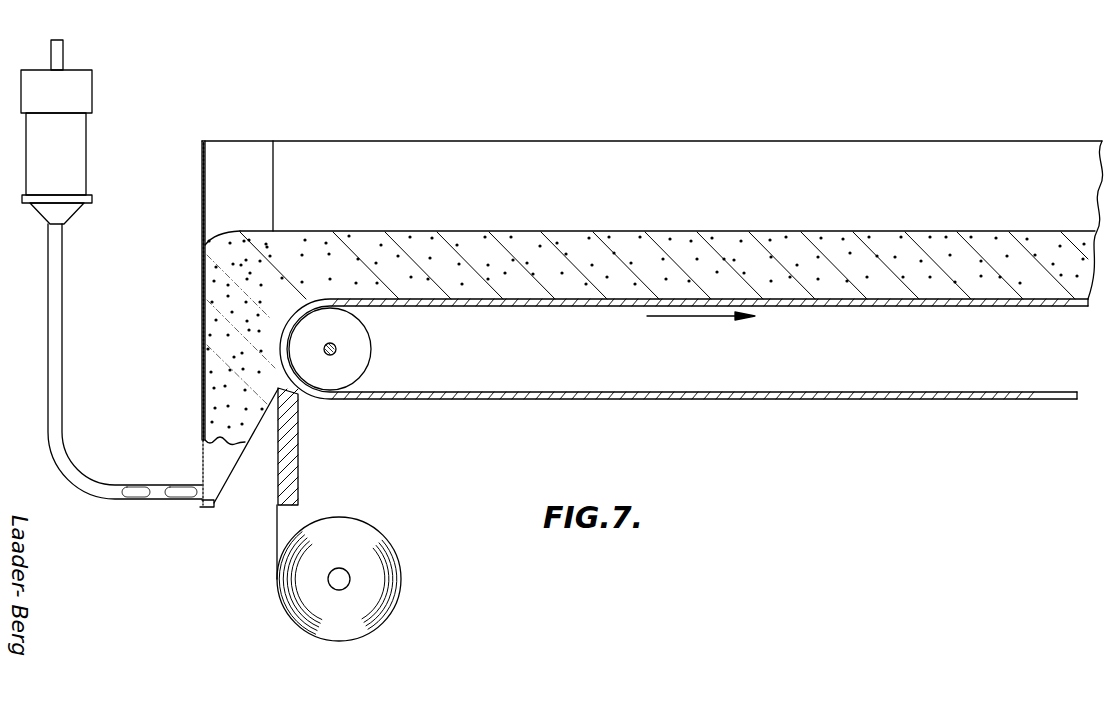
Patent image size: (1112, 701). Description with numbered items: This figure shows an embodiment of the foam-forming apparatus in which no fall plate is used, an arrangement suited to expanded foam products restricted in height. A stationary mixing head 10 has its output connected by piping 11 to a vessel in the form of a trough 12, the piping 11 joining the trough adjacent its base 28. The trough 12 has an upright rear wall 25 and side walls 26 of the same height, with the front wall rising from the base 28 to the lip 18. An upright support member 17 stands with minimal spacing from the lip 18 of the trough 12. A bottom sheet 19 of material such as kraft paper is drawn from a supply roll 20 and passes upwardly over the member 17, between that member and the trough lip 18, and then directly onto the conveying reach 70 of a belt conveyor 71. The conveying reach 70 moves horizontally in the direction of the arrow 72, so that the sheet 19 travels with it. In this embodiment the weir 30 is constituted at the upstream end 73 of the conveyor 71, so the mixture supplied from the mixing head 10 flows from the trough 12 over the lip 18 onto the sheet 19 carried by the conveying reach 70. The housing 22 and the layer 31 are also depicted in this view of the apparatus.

The mixing head 10 is at (78, 146).
The piping 11 is at (53, 459).
The trough 12 is at (196, 432).
The upright support member 17 is at (298, 488).
The lip 18 is at (273, 388).
The sheet of material 19 is at (275, 518).
The supply roll 20 is at (363, 552).
The housing 22 is at (515, 157).
The rear wall 25 is at (200, 222).
The side walls 26 is at (252, 147).
The base 28 is at (200, 507).
The weir 30 is at (305, 284).
The powder layer 31 is at (460, 228).
The conveying reach 70 is at (487, 309).
The belt conveyor 71 is at (614, 377).
The arrow 72 is at (697, 320).
The upstream end 73 is at (302, 323).